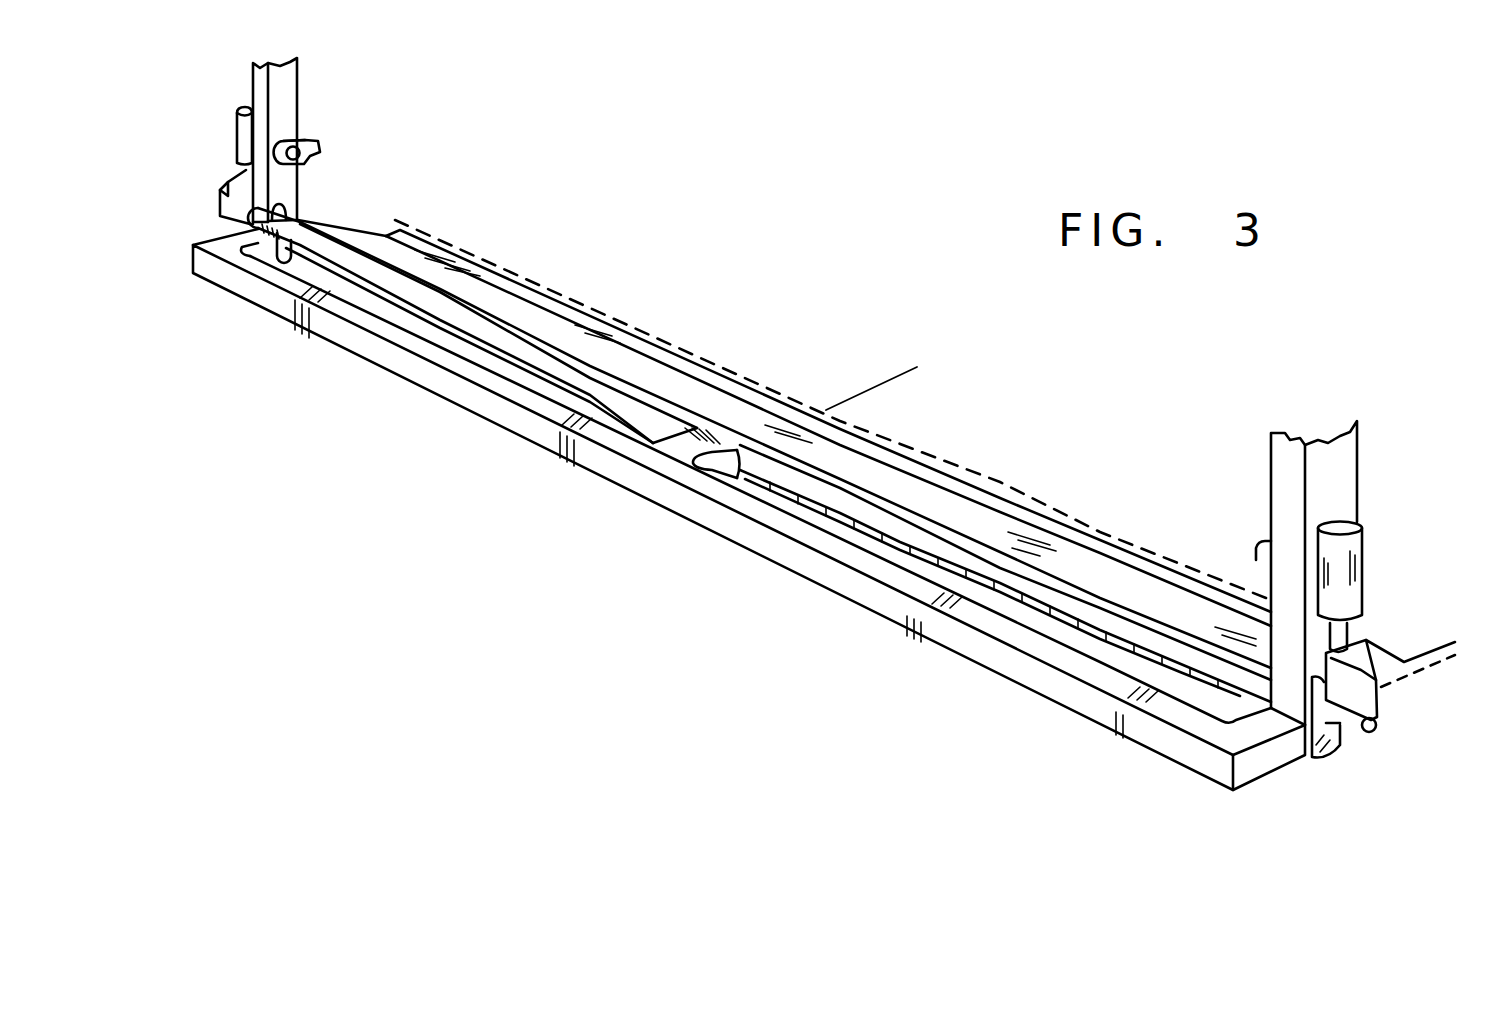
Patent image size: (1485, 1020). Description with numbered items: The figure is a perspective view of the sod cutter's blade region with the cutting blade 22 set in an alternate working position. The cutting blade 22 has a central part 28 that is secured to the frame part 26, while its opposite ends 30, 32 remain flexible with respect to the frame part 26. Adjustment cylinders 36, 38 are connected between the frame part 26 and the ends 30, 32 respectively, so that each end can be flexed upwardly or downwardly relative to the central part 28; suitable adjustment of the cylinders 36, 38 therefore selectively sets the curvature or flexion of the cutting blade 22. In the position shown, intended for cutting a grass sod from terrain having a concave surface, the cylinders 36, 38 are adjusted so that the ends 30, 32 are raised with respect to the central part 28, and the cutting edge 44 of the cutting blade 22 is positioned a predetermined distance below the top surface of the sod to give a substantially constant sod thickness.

The cutting blade 22 is at (760, 433).
The frame part 26 is at (1263, 750).
The central part 28 is at (740, 466).
The end 30 is at (1243, 630).
The end 32 is at (346, 240).
The adjustment cylinder 36 is at (1345, 575).
The adjustment cylinder 38 is at (238, 126).
The cutting edge 44 is at (1067, 552).